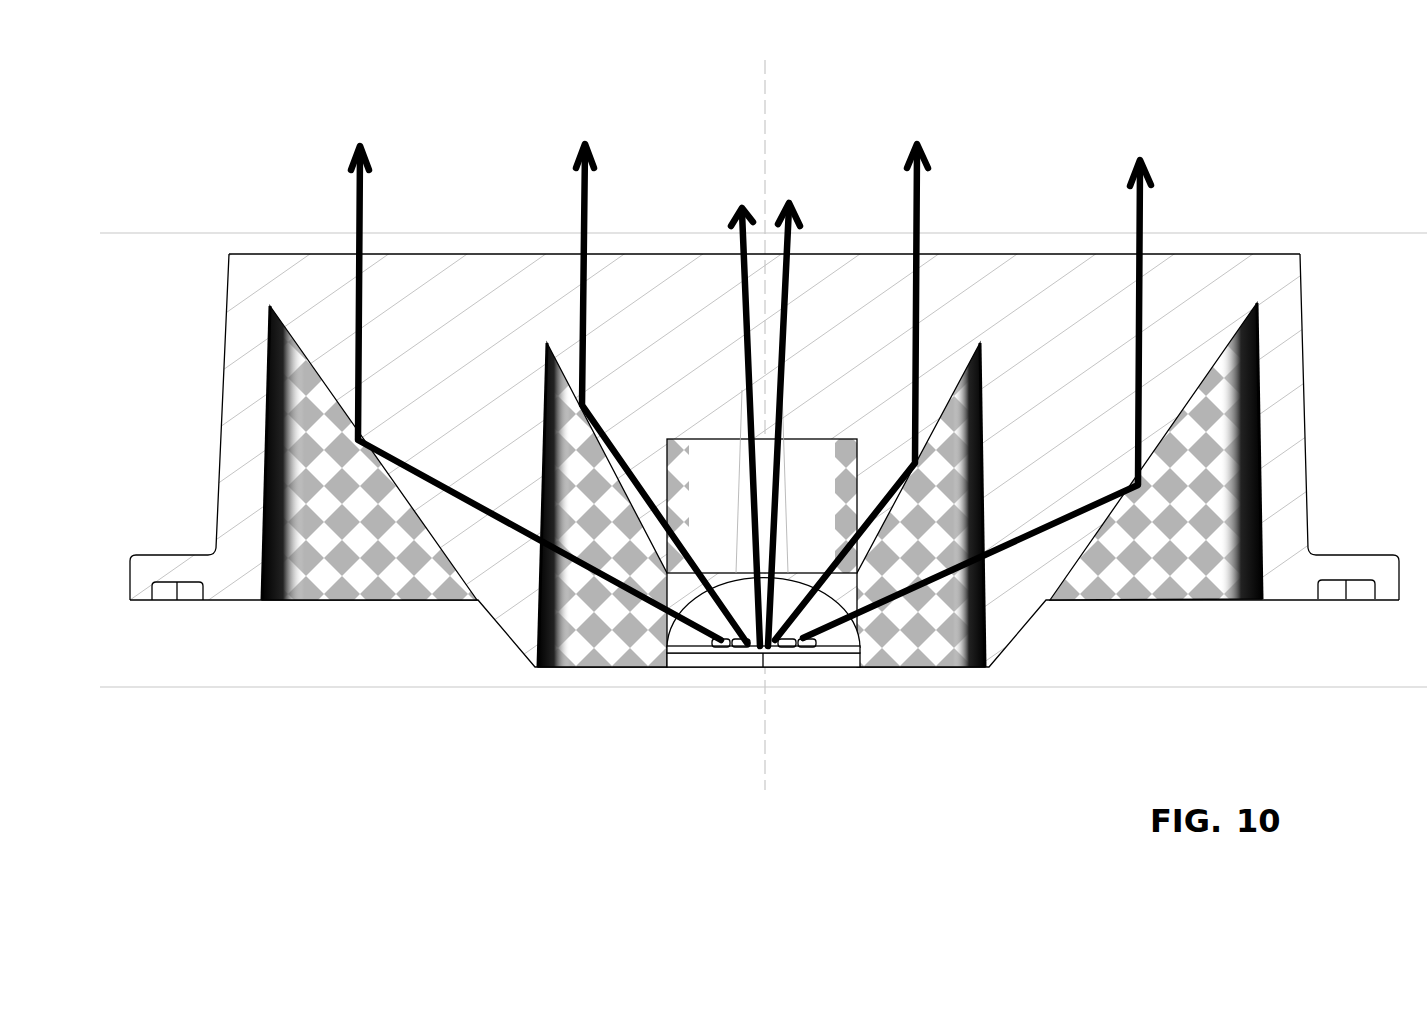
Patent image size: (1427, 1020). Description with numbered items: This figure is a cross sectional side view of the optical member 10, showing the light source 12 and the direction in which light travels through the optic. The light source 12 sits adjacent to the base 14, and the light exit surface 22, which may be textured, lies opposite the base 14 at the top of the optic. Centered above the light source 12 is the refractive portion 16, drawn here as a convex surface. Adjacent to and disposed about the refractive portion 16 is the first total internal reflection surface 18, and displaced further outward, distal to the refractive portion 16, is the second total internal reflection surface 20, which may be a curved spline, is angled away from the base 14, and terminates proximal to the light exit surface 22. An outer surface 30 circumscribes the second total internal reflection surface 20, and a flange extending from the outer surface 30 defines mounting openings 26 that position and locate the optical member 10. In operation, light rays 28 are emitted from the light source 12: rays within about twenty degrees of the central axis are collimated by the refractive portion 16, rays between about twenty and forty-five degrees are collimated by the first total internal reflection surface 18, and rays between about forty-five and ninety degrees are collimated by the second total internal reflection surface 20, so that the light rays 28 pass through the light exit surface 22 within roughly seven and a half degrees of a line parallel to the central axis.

The optical member 10 is at (1258, 125).
The light source 12 is at (700, 645).
The base 14 is at (837, 662).
The refractive portion 16 is at (813, 455).
The first total internal reflection surface 18 is at (968, 347).
The second total internal reflection surface 20 is at (1259, 322).
The light exit surface 22 is at (482, 258).
The mounting openings 26 is at (155, 605).
The light rays 28 is at (362, 193).
The outer surface 30 is at (232, 423).